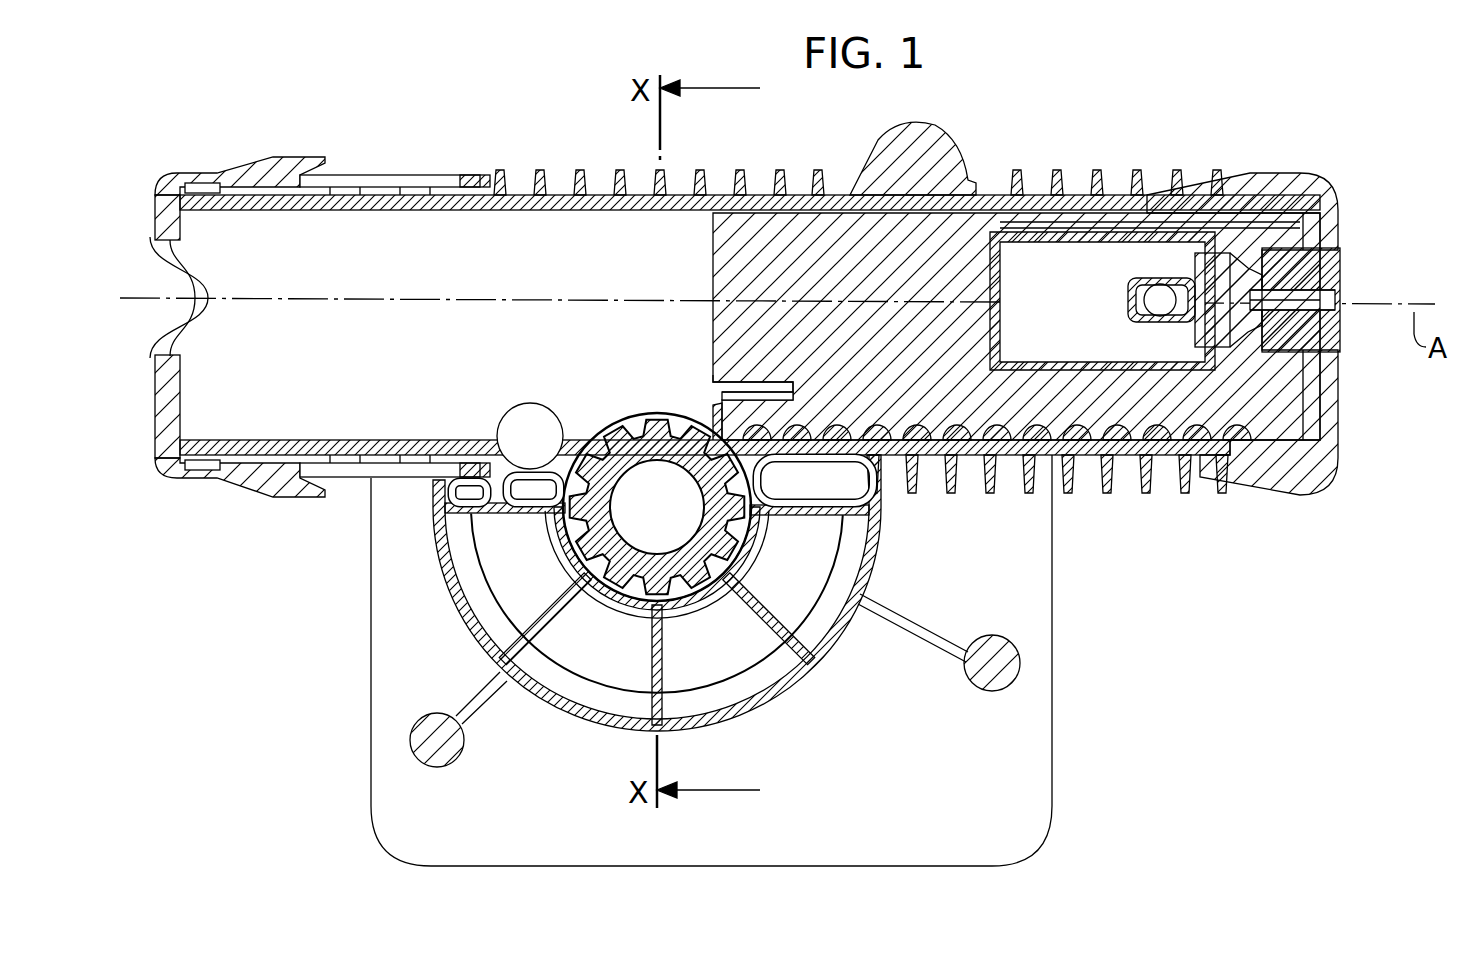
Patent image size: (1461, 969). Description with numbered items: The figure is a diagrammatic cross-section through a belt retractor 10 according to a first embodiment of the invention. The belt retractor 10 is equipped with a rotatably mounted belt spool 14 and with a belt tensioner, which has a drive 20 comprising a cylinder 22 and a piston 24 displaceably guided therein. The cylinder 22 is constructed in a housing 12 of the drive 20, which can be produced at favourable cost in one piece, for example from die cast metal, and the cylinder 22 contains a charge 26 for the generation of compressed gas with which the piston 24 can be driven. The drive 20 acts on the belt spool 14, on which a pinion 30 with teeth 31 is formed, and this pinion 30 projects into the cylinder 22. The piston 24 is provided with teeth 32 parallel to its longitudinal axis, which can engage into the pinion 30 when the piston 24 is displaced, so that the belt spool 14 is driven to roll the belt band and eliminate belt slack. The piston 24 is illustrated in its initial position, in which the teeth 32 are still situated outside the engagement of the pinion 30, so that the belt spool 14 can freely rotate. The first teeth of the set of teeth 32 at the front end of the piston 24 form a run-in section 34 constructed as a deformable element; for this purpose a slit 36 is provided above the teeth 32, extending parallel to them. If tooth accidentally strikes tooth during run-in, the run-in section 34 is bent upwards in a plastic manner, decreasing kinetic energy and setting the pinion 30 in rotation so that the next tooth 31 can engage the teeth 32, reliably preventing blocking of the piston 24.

The belt retractor 10 is at (1060, 808).
The housing 12 is at (438, 190).
The belt spool 14 is at (745, 650).
The drive 20 is at (370, 150).
The cylinder 22 is at (745, 309).
The piston 24 is at (950, 398).
The charge 26 is at (1105, 255).
The pinion 30 is at (640, 572).
The teeth 31 is at (612, 432).
The teeth 32 is at (1165, 442).
The run-in section 34 is at (712, 410).
The slit 36 is at (714, 385).